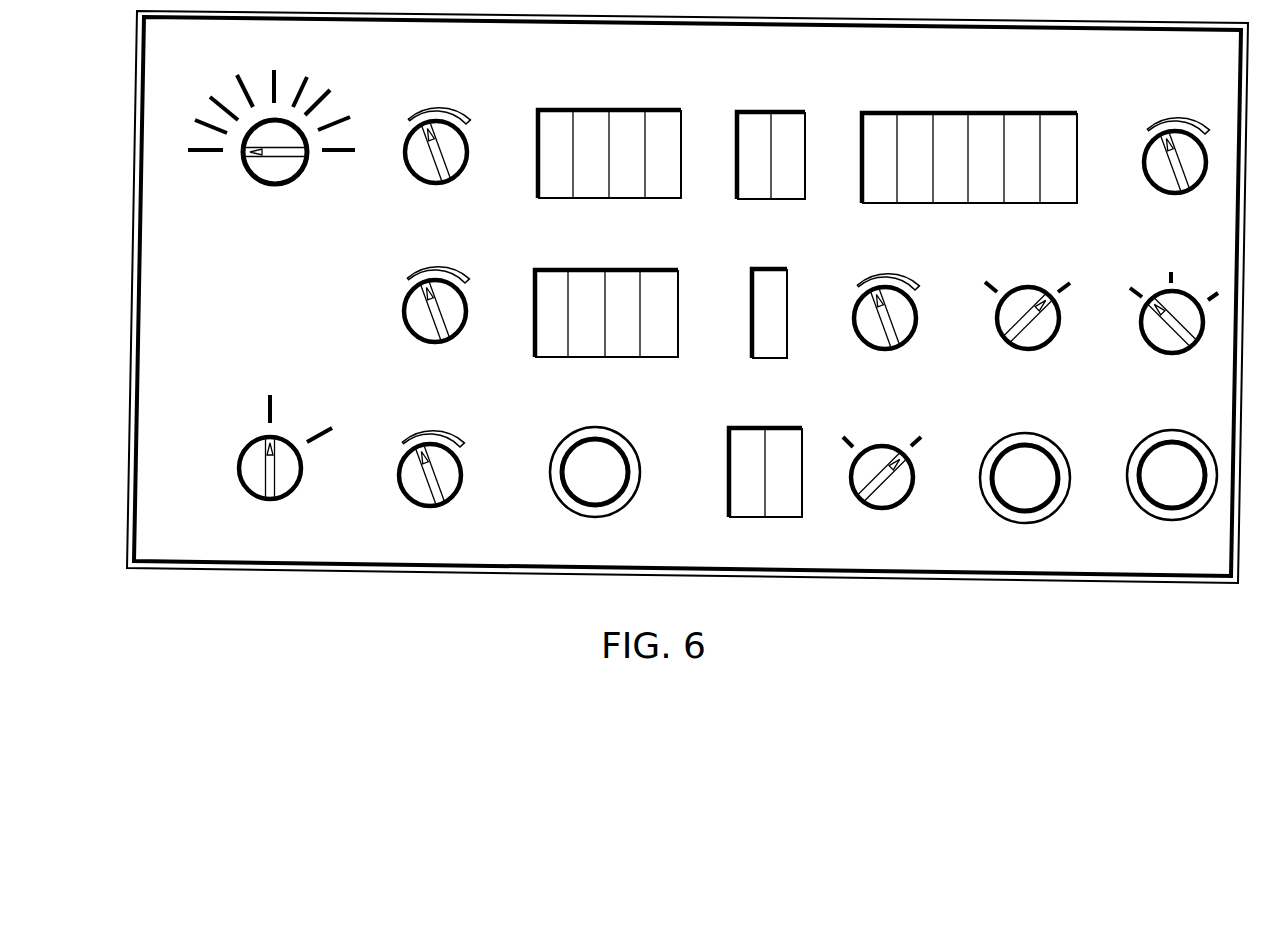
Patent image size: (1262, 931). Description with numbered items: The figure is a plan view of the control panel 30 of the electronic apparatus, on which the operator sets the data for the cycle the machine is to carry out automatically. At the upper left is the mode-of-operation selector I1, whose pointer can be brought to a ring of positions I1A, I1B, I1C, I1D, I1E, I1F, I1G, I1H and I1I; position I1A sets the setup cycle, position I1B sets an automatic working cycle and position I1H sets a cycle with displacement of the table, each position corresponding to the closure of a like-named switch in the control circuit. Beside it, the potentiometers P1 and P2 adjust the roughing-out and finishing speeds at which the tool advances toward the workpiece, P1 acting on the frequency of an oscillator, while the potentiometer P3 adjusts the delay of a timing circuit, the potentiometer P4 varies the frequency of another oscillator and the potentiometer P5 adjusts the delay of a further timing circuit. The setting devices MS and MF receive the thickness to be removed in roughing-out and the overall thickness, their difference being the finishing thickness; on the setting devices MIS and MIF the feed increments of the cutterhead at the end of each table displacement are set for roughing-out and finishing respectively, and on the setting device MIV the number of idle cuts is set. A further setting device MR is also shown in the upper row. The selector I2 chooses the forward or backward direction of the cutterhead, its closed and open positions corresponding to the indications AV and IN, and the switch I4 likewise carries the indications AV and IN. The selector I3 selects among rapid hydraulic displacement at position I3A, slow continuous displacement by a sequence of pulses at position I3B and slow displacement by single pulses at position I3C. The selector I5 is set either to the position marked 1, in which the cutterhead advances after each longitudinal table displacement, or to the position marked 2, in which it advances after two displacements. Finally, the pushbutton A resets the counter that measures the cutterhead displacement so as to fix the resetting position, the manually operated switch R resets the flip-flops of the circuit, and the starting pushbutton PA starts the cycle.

The panel 30 is at (838, 583).
The selector I1 is at (263, 178).
The switch I1A is at (186, 157).
The switch I1B is at (193, 112).
The selector position C I1C is at (206, 91).
The switch I1D is at (229, 69).
The selector position E I1E is at (275, 62).
The selector position F I1F is at (316, 69).
The selector position G I1G is at (337, 87).
The switch I1H is at (353, 114).
The switch I1I is at (354, 154).
The potentiometer P1 is at (425, 172).
The potentiometer P2 is at (423, 330).
The potentiometer P3 is at (418, 492).
The potentiometer P4 is at (880, 340).
The potentiometer P5 is at (1156, 176).
The setting device MS is at (580, 192).
The setting device MIS is at (752, 192).
The digital display MR is at (938, 193).
The setting device MF is at (577, 350).
The setting device MIF is at (759, 350).
The setting device MIV is at (742, 507).
The selector I2 is at (1028, 340).
The selector I3 is at (1166, 345).
The switch I3A is at (1126, 277).
The switch I3B is at (1168, 261).
The switch I3C is at (1215, 279).
The switch I4 is at (874, 497).
The switch I5 is at (257, 488).
The first position indication 1 is at (269, 396).
The second position indication 2 is at (328, 424).
The FORWARD indication AV is at (907, 354).
The BACKWARD indication IN is at (1000, 354).
The pushbutton A is at (583, 492).
The switch R is at (1018, 496).
The starting pushbutton PA is at (1165, 497).